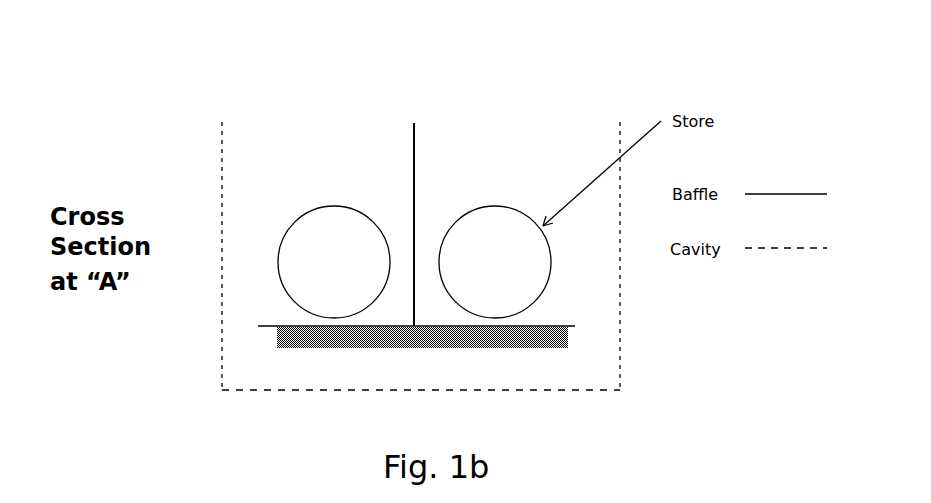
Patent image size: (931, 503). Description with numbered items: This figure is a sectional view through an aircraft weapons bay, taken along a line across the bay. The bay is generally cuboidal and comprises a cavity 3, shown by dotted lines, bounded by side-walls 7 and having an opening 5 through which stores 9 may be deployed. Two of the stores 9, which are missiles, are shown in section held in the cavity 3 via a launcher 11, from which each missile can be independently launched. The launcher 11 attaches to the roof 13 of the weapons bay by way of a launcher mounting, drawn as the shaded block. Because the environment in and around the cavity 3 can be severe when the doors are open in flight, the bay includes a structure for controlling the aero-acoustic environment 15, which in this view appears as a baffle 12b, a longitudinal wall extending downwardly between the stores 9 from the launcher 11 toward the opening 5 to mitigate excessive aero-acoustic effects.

The cavity 3 is at (271, 186).
The opening 5 is at (282, 120).
The side-walls 7 is at (212, 337).
The stores 9 is at (414, 262).
The launcher 11 is at (518, 348).
The baffle 12b is at (424, 196).
The roof 13 is at (300, 393).
The structure for controlling the aero-acoustic environment 15 is at (427, 129).